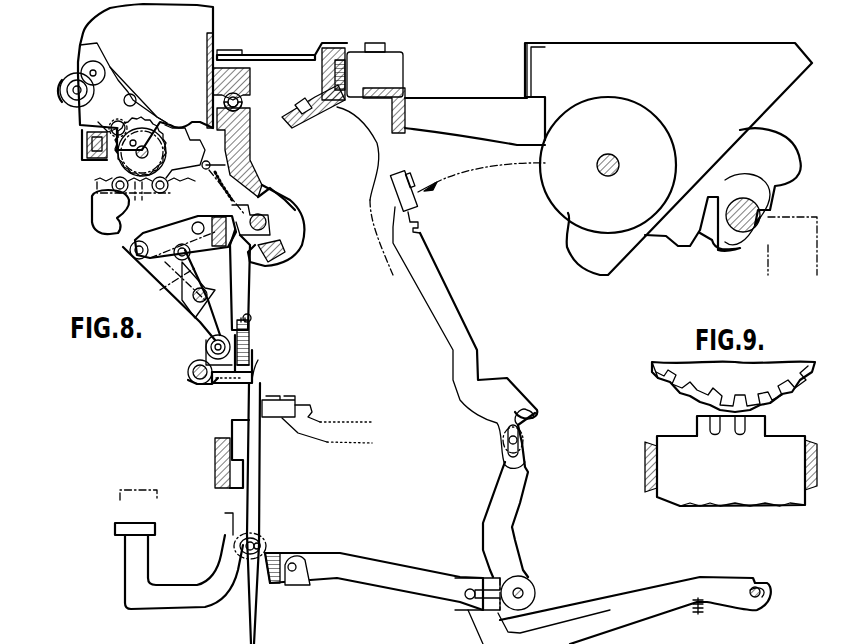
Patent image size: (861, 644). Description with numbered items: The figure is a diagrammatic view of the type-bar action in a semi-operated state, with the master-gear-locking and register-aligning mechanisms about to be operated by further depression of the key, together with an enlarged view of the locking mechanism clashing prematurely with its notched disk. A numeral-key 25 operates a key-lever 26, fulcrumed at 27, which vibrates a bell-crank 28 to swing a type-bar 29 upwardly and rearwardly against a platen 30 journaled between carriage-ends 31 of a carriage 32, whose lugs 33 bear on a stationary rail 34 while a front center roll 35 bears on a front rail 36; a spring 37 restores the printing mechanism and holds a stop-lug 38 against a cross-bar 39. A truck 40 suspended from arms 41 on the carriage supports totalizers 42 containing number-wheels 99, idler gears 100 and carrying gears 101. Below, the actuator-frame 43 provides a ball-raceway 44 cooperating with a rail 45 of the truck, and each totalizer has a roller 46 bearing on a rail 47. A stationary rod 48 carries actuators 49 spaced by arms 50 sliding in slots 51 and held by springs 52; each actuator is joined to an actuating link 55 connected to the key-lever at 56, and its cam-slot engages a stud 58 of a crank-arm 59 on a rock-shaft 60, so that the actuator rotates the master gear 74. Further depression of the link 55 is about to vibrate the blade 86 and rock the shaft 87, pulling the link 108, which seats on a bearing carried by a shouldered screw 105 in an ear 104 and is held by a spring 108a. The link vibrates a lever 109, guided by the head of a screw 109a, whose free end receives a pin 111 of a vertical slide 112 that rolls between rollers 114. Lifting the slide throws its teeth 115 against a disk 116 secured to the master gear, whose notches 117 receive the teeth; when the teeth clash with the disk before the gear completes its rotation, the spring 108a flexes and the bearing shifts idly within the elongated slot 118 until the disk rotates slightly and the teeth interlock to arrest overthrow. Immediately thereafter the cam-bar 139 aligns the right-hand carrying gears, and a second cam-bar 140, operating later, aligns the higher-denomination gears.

In FIG. 8, the numeral-key 25 is at (116, 523).
In FIG. 8, the key-lever 26 is at (398, 565).
In FIG. 8, the fulcrum 27 is at (758, 583).
In FIG. 8, the bell-crank 28 is at (520, 537).
In FIG. 8, the type-bar 29 is at (458, 316).
In FIG. 8, the platen 30 is at (608, 165).
In FIG. 8, the carriage-end 31 is at (668, 159).
In FIG. 8, the carriage 32 is at (454, 94).
In FIG. 8, the lug 33 is at (714, 244).
In FIG. 8, the stationary rail 34 is at (748, 200).
In FIG. 8, the front center roll 35 is at (352, 46).
In FIG. 8, the front rail 36 is at (320, 110).
In FIG. 8, the spring 37 is at (705, 614).
In FIG. 8, the stop-lug 38 is at (228, 530).
In FIG. 8, the cross-bar 39 is at (216, 480).
In FIG. 8, the truck 40 is at (216, 46).
In FIG. 8, the arm 41 is at (270, 57).
In FIG. 8, the totalizer 42 is at (145, 77).
In FIG. 8, the actuator-frame 43 is at (255, 160).
In FIG. 8, the anti-friction ball-raceway 44 is at (252, 112).
In FIG. 8, the rail 45 is at (250, 92).
In FIG. 8, the roller 46 is at (86, 152).
In FIG. 8, the rail 47 is at (92, 158).
In FIG. 8, the stationary rod 48 is at (270, 222).
In FIG. 8, the actuator 49 is at (286, 246).
In FIG. 8, the arm 50 is at (298, 204).
In FIG. 8, the slot 51 is at (277, 190).
In FIG. 8, the spring 52 is at (228, 192).
In FIG. 8, the actuating link 55 is at (262, 502).
In FIG. 8, the connection 56 is at (266, 543).
In FIG. 8, the stud 58 is at (178, 258).
In FIG. 8, the crank-arm 59 is at (160, 285).
In FIG. 8, the rock-shaft 60 is at (190, 312).
In FIG. 8, the master gear 74 is at (160, 118).
In FIG. 8, the blade 86 is at (235, 384).
In FIG. 8, the shaft 87 is at (196, 383).
In FIG. 8, the number-wheel 99 is at (66, 103).
In FIG. 8, the idler gear 100 is at (80, 60).
In FIG. 8, the carrying gear 101 is at (136, 104).
In FIG. 8, the ear 104 is at (255, 360).
In FIG. 8, the shouldered screw 105 is at (205, 346).
In FIG. 8, the link 108 is at (244, 290).
In FIG. 8, the spring 108a is at (255, 336).
In FIG. 8, the lever 109 is at (185, 232).
In FIG. 8, the screw 109a is at (130, 256).
In FIG. 8, the pin 111 is at (118, 220).
In FIG. 8, the vertical slide 112 is at (133, 195).
In FIG. 9, the vertical slide 112 is at (731, 471).
In FIG. 8, the roller 114 is at (168, 184).
In FIG. 9, the roller 114 is at (645, 466).
In FIG. 9, the tooth 115 is at (768, 422).
In FIG. 8, the disk 116 is at (165, 155).
In FIG. 9, the disk 116 is at (765, 385).
In FIG. 9, the notch 117 is at (665, 388).
In FIG. 8, the elongated slot 118 is at (190, 370).
In FIG. 8, the cam-bar 139 is at (100, 120).
In FIG. 8, the cam-bar 140 is at (126, 120).